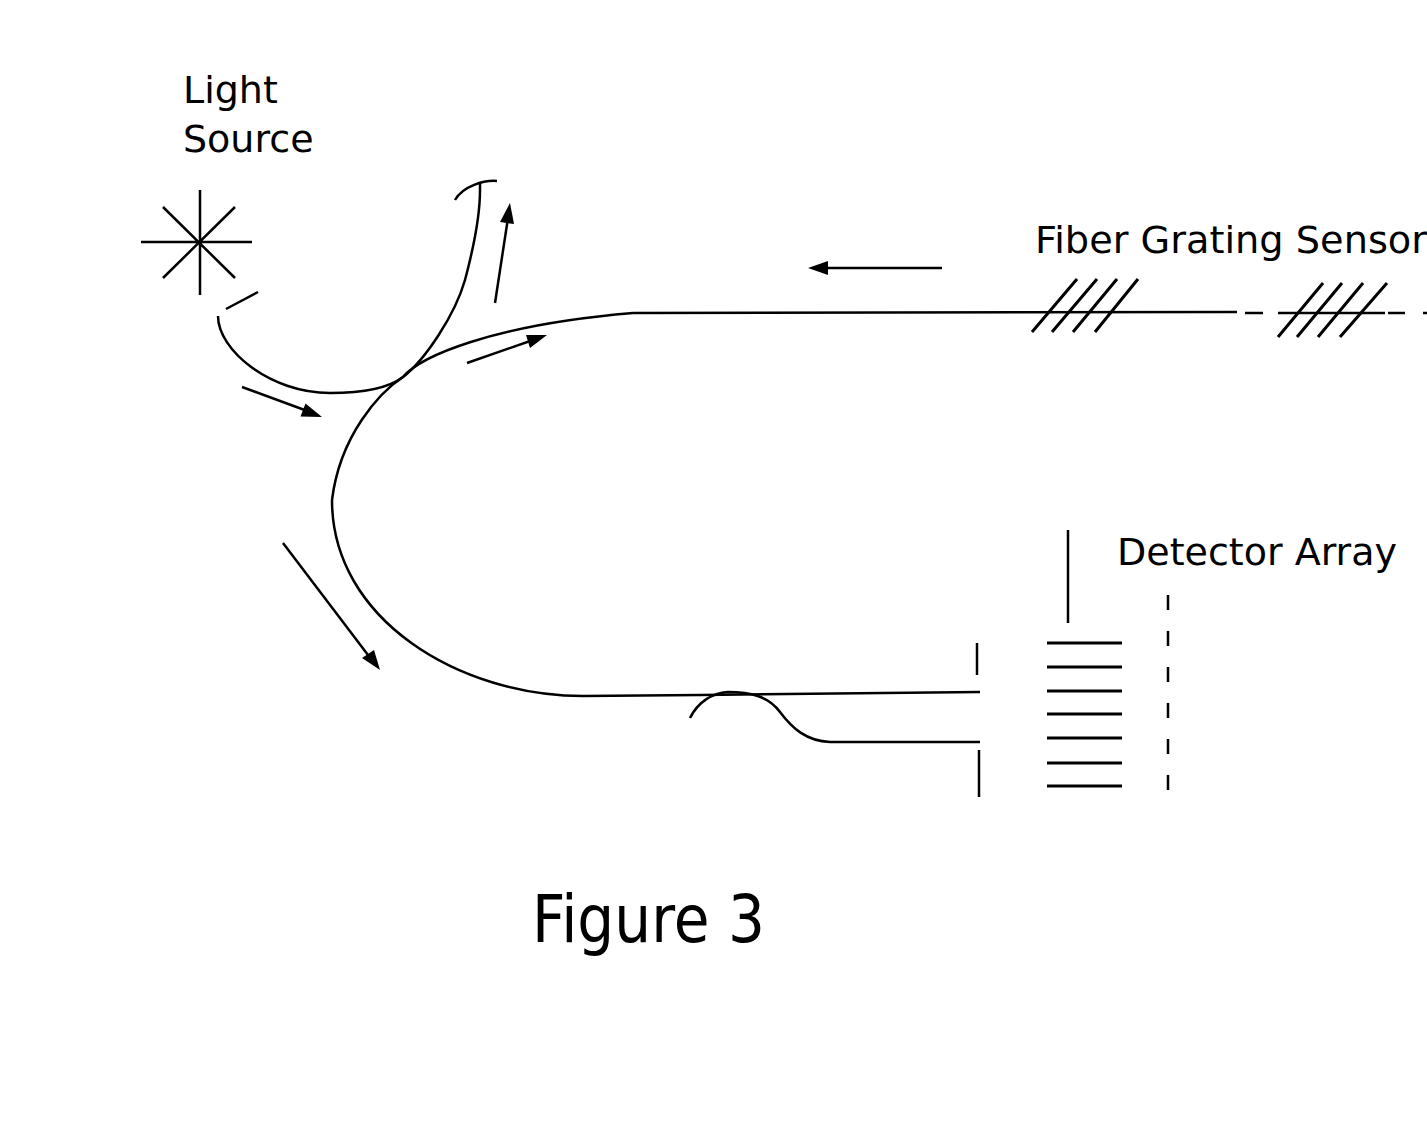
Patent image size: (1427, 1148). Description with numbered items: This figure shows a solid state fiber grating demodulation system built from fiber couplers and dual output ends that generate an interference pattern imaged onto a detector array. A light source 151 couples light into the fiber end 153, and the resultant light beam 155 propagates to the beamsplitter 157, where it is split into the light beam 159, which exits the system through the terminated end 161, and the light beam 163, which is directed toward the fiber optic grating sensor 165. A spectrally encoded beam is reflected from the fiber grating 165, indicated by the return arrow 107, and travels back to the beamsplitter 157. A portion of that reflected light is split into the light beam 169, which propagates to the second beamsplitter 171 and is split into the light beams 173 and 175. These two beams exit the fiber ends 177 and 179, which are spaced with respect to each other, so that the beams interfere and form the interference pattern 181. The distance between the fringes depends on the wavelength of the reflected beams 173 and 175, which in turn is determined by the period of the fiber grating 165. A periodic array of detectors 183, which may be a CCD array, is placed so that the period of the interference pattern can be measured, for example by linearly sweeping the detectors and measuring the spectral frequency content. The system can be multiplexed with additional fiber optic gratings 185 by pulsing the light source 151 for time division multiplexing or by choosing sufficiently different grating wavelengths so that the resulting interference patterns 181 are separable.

The reflected light direction arrow 107 is at (875, 243).
The light source 151 is at (222, 236).
The fiber end 153 is at (310, 327).
The light beam 155 is at (280, 426).
The beamsplitter 157 is at (482, 406).
The light beam 159 is at (553, 253).
The terminated end 161 is at (459, 253).
The light beam 163 is at (513, 368).
The fiber optic grating sensor 165 is at (1085, 343).
The light beam 169 is at (320, 610).
The beamsplitter 171 is at (760, 688).
The light beam 173 is at (840, 668).
The light beam 175 is at (905, 770).
The fiber end 177 is at (990, 632).
The fiber end 179 is at (983, 806).
The interference pattern 181 is at (1082, 638).
The array of detectors 183 is at (1185, 729).
The additional fiber optic grating 185 is at (1336, 342).